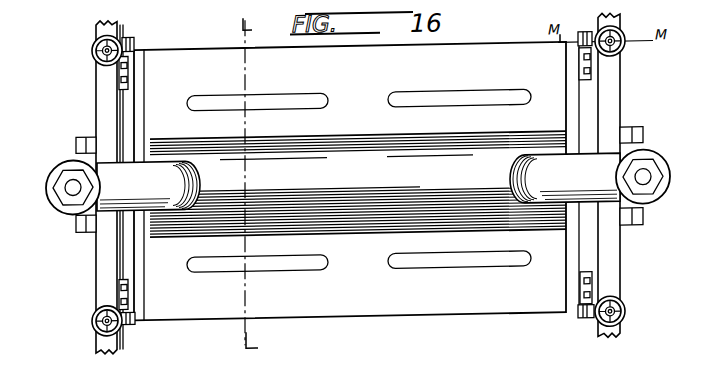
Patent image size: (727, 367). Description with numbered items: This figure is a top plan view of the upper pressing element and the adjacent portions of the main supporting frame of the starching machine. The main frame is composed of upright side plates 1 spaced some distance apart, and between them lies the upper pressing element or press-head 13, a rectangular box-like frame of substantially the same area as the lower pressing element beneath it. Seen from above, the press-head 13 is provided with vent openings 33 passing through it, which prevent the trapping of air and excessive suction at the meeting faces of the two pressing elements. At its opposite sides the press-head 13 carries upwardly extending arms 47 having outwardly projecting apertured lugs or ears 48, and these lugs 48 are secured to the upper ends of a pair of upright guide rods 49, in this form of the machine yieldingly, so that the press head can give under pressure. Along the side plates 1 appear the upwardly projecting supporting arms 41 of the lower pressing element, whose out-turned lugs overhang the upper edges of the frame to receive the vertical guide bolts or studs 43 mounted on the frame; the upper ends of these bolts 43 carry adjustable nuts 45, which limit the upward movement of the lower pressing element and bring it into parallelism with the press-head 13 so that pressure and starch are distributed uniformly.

The upright side plate 1 is at (103, 278).
The press-head 13 is at (373, 305).
The vent opening 33 is at (400, 96).
The supporting arm 41 is at (130, 34).
The vertical guide bolt 43 is at (92, 46).
The adjustable nut 45 is at (96, 35).
The upwardly extending arm 47 is at (358, 182).
The apertured lug 48 is at (60, 199).
The upright guide rod 49 is at (73, 182).